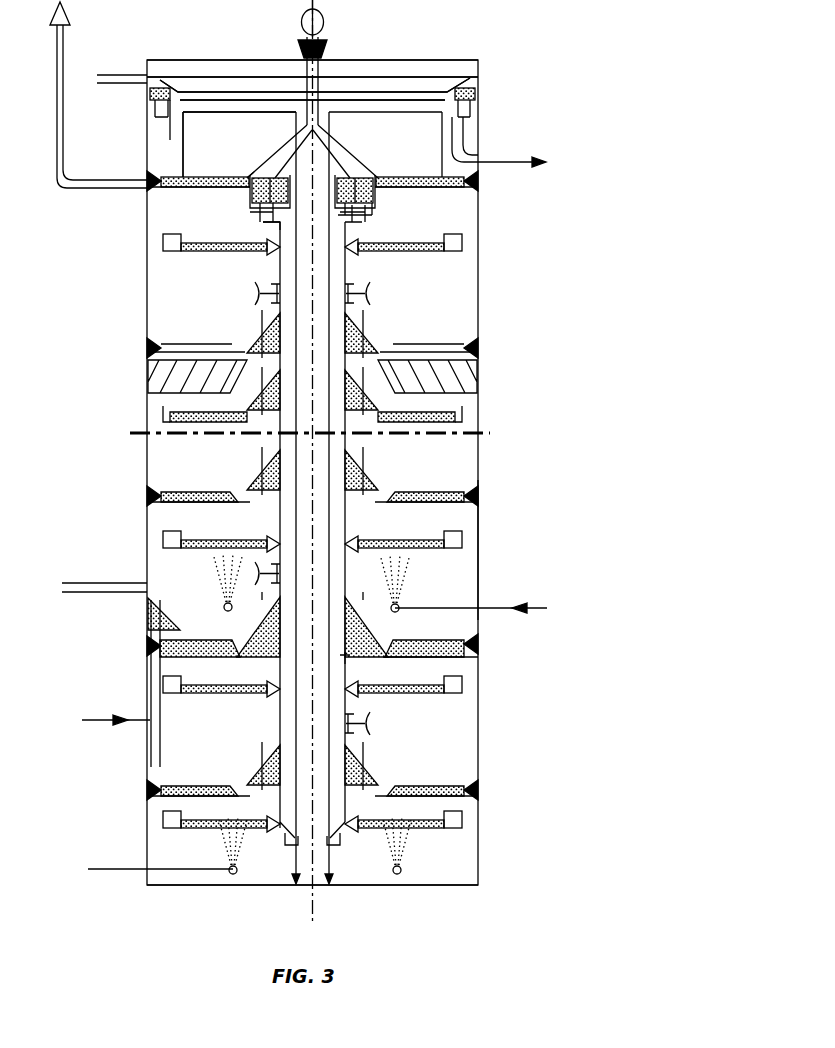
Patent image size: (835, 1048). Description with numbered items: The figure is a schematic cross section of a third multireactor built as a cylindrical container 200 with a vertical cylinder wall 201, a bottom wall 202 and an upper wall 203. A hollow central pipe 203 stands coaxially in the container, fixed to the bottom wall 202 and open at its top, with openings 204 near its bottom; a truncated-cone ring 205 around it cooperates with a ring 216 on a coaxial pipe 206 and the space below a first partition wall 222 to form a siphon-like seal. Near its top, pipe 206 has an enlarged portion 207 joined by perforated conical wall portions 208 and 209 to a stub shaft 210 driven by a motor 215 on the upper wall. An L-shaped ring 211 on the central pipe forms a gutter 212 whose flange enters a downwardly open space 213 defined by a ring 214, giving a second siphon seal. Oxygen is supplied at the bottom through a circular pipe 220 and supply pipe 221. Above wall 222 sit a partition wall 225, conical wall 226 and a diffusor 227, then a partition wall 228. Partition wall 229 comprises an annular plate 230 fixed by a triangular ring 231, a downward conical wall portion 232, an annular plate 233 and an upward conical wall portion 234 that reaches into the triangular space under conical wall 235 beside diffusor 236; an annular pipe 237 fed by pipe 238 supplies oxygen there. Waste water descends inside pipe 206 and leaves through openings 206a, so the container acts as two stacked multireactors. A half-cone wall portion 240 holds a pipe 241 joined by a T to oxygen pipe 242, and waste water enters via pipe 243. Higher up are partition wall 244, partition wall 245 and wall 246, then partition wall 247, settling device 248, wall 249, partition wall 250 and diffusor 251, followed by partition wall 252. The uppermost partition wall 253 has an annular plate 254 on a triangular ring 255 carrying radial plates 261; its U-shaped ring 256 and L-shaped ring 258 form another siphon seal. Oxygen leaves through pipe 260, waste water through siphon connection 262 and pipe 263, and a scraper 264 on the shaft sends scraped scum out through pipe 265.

The cylindrical container 200 is at (478, 512).
The cylinder wall 201 is at (480, 550).
The bottom wall 202 is at (396, 887).
The upper wall 203 is at (364, 60).
The openings 204 is at (336, 878).
The ring 205 is at (290, 832).
The pipe 206 is at (350, 532).
The openings 206a is at (349, 660).
The portion with enlarged diameter 207 is at (368, 178).
The conical wall portion 208 is at (355, 226).
The conical wall portion 209 is at (325, 135).
The stub shaft 210 is at (305, 66).
The ring with L-shaped cross section 211 is at (366, 214).
The gutter 212 is at (372, 210).
The space 213 is at (281, 178).
The ring with L-shaped cross section 214 is at (258, 214).
The motor 215 is at (323, 22).
The ring 216 is at (295, 845).
The circularly formed pipe 220 is at (403, 872).
The supply pipe 221 is at (178, 886).
The first partition wall 222 is at (425, 814).
The partition wall 225 is at (418, 786).
The conical wall 226 is at (372, 775).
The seal 227 is at (376, 722).
The partition wall 228 is at (396, 690).
The partition wall 229 is at (452, 640).
The annular plate 230 is at (470, 657).
The ring with triangular cross section 231 is at (485, 644).
The conical wall portion 232 is at (399, 626).
The annular plate 233 is at (258, 655).
The conical wall portion 234 is at (252, 660).
The conical wall 235 is at (366, 608).
The diffusor 236 is at (265, 568).
The annular pipe 237 is at (225, 608).
The pipe 238 is at (498, 606).
The wall portion 240 is at (156, 600).
The pipe 241 is at (151, 676).
The pipe 242 is at (108, 722).
The pipe 243 is at (82, 583).
The partition wall 244 is at (182, 540).
The partition wall 245 is at (187, 492).
The wall 246 is at (366, 450).
The partition wall 247 is at (462, 412).
The settling device 248 is at (440, 375).
The wall 249 is at (368, 335).
The partition wall 250 is at (420, 345).
The diffusor 251 is at (370, 295).
The partition wall 252 is at (208, 254).
The partition wall 253 is at (205, 176).
The annular plate 254 is at (220, 188).
The ring with triangular cross section 255 is at (145, 178).
The ring with U-shaped cross section 256 is at (264, 223).
The ring with L-shaped cross section 258 is at (268, 170).
The pipe 260 is at (64, 122).
The radially oriented plates 261 is at (256, 137).
The siphon-like connection 262 is at (170, 88).
The pipe 263 is at (462, 136).
The trough 264 is at (430, 78).
The pipe 265 is at (115, 75).